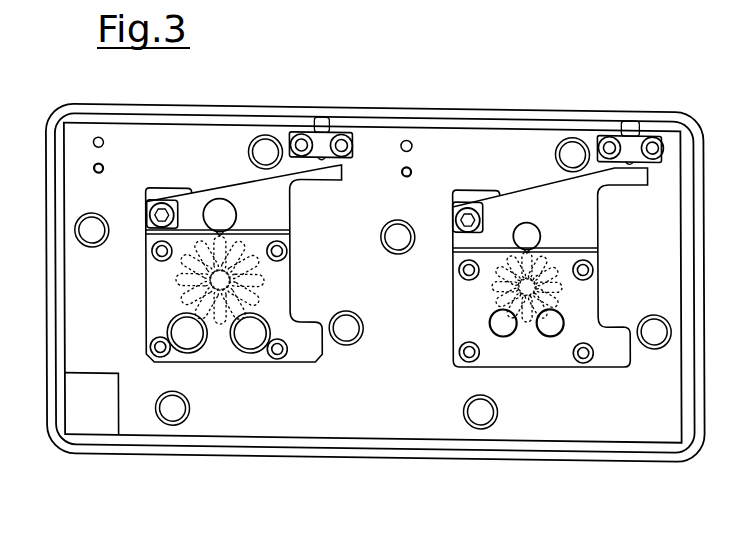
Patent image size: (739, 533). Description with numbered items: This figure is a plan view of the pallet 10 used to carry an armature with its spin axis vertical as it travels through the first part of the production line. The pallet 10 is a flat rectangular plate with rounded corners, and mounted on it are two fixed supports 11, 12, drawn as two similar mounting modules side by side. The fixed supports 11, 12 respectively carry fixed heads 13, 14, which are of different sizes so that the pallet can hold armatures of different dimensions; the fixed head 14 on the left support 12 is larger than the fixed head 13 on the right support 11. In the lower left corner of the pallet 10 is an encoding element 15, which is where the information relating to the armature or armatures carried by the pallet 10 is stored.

The pallet 10 is at (458, 151).
The fixed support 11 is at (573, 212).
The fixed support 12 is at (275, 201).
The fixed head 13 is at (563, 314).
The fixed head 14 is at (263, 320).
The encoding element 15 is at (95, 416).